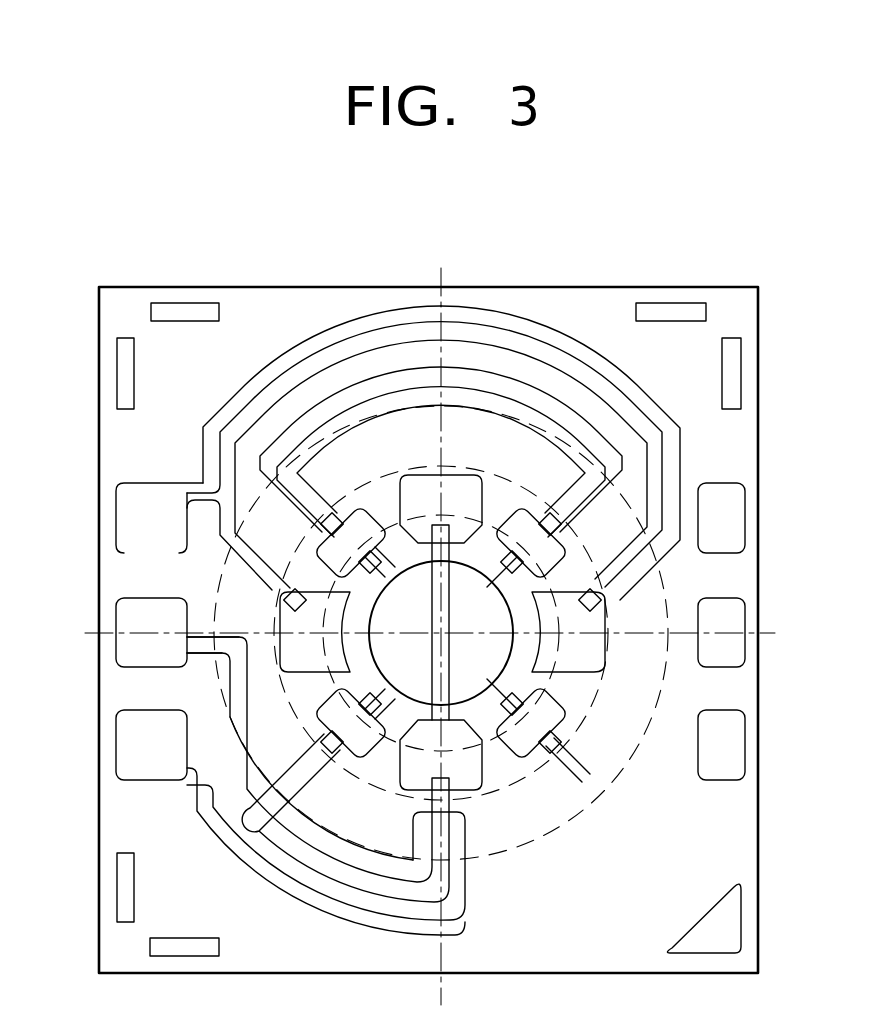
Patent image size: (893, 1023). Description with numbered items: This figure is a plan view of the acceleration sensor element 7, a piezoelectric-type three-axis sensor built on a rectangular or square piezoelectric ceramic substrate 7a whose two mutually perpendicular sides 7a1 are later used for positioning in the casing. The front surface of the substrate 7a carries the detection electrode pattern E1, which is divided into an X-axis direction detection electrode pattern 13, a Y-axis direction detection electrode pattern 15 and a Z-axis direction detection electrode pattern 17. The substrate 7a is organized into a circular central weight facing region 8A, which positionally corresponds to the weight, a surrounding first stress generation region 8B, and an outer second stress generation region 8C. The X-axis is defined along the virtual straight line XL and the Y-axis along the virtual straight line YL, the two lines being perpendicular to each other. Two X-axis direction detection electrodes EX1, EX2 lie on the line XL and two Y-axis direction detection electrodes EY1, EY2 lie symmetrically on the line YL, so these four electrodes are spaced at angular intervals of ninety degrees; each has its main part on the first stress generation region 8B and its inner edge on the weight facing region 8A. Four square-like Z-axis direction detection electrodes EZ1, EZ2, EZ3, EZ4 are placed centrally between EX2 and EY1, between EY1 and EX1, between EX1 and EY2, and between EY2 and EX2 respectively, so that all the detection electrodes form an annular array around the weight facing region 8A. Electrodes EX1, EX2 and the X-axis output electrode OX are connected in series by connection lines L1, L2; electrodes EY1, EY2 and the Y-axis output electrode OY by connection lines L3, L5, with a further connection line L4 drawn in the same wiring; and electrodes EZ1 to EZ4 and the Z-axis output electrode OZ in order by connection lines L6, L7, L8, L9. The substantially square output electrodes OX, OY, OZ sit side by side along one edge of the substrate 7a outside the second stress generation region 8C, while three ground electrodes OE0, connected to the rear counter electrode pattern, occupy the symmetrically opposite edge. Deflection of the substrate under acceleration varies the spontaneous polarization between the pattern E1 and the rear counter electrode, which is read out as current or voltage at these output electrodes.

The acceleration sensor element 7 is at (737, 284).
The piezoelectric ceramic substrate 7a is at (725, 441).
The sides of the piezoelectric ceramic substrate 7a1 is at (72, 421).
The X-axis direction detection electrode pattern 13 is at (470, 890).
The Y-axis direction detection electrode pattern 15 is at (415, 410).
The Z-axis direction detection electrode pattern 17 is at (441, 378).
The weight facing region 8A is at (520, 722).
The first stress generation region 8B is at (537, 772).
The second stress generation region 8C is at (537, 830).
The connection line L1 is at (358, 598).
The connection line L2 is at (393, 905).
The connection line L3 is at (493, 333).
The connection line L4 is at (223, 548).
The connection line L5 is at (203, 490).
The connection line L6 is at (537, 693).
The connection line L7 is at (441, 453).
The connection line L8 is at (385, 650).
The connection line L9 is at (270, 645).
The X-axis direction detection electrode EX1 is at (422, 492).
The X-axis direction detection electrode EX2 is at (470, 772).
The Y-axis direction detection electrode EY1 is at (588, 652).
The Y-axis direction detection electrode EY2 is at (258, 663).
The Z-axis direction detection electrode EZ1 is at (540, 745).
The Z-axis direction detection electrode EZ2 is at (545, 505).
The Z-axis direction detection electrode EZ3 is at (362, 480).
The Z-axis direction detection electrode EZ4 is at (302, 792).
The detection electrode pattern E1 is at (600, 320).
The X-axis output electrode OX is at (116, 761).
The Y-axis output electrode OY is at (116, 496).
The Z-axis output electrode OZ is at (116, 619).
The ground electrode OE0 is at (727, 503).
The virtual X-axis straight line XL is at (435, 643).
The virtual Y-axis straight line YL is at (447, 634).